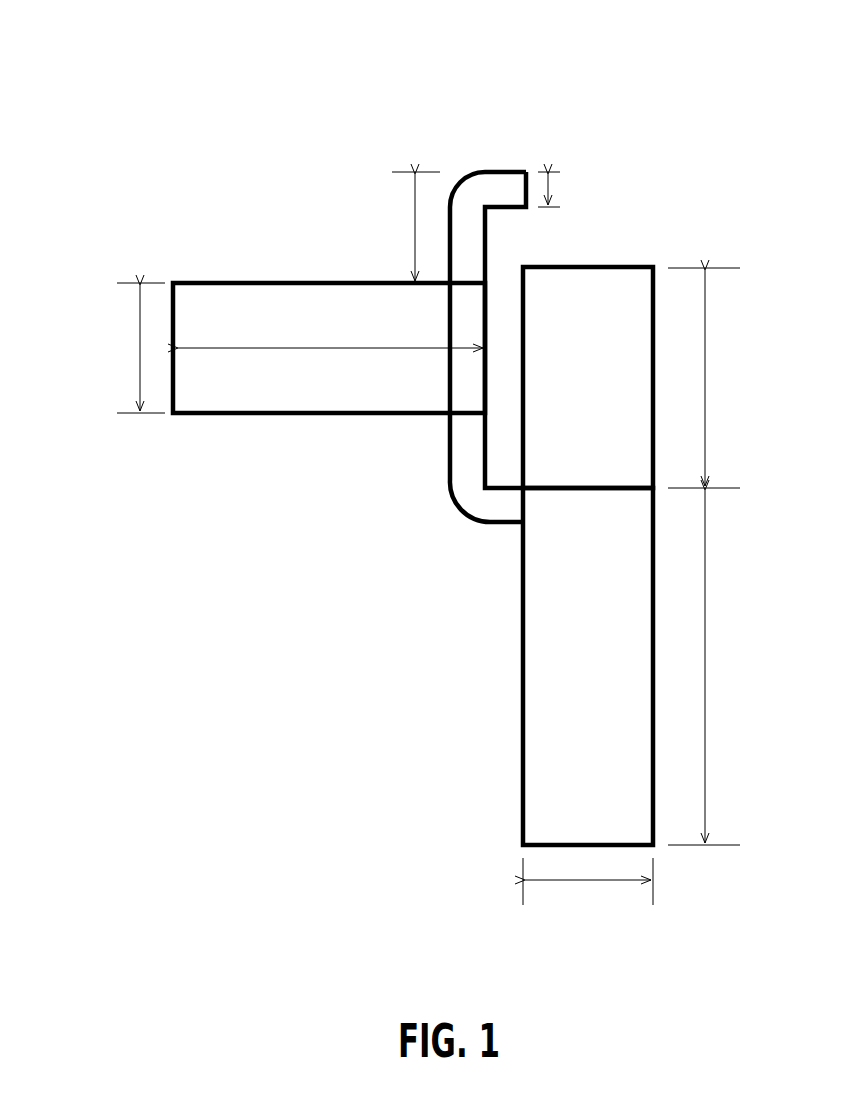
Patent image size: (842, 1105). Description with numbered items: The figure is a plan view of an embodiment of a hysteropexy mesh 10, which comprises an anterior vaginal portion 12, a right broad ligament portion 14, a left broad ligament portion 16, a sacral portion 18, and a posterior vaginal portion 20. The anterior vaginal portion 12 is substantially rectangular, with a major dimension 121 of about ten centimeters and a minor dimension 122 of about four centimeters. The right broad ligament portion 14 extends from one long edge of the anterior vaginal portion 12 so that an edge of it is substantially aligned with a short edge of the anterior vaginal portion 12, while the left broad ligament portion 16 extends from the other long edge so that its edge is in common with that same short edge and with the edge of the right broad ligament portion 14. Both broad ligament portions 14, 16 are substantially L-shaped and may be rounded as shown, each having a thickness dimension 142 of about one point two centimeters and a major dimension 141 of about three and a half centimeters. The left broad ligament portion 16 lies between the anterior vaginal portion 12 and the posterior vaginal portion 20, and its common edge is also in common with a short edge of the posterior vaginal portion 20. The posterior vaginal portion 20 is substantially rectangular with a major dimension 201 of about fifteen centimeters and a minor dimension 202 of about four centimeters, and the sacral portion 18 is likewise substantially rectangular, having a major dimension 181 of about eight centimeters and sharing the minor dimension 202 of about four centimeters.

The hysteropexy mesh 10 is at (322, 67).
The anterior vaginal portion 12 is at (173, 283).
The major dimension 121 is at (303, 348).
The minor dimension 122 is at (140, 345).
The right broad ligament portion 14 is at (526, 172).
The major dimension 141 is at (415, 225).
The thickness dimension 142 is at (548, 190).
The left broad ligament portion 16 is at (450, 478).
The sacral portion 18 is at (597, 267).
The major dimension 181 is at (705, 388).
The posterior vaginal portion 20 is at (523, 645).
The major dimension 201 is at (705, 660).
The minor dimension 202 is at (580, 882).